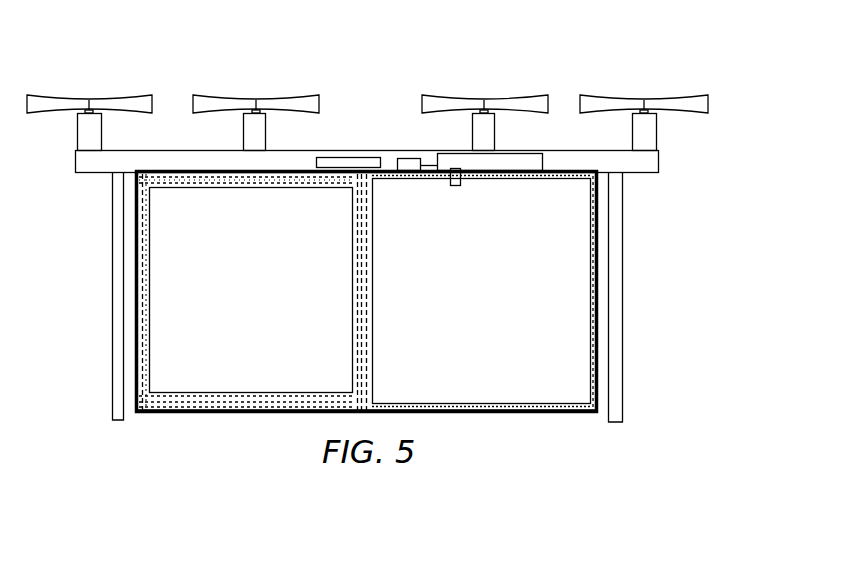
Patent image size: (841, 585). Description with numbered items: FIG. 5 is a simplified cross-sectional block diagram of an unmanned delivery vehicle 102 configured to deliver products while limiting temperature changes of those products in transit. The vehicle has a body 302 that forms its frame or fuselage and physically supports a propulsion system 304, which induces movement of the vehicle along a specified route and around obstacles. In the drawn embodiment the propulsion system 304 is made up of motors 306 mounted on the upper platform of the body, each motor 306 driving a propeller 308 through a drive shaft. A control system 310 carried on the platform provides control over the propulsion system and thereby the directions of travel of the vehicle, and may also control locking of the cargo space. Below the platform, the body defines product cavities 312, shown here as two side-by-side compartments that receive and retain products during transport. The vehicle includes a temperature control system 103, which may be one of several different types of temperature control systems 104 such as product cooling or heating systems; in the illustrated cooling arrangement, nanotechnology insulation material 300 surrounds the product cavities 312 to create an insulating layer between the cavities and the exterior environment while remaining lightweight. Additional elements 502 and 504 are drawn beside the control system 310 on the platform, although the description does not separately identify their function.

The unmanned delivery vehicle 102 is at (708, 66).
The temperature control system 103 is at (565, 429).
The temperature control system 104 is at (415, 140).
The nanotechnology insulation material 300 is at (471, 409).
The body 302 is at (234, 412).
The propulsion system 304 is at (275, 83).
The motor 306 is at (101, 140).
The propeller 308 is at (205, 97).
The control system 310 is at (366, 157).
The product cavity 312 is at (188, 313).
The sensor 502 is at (407, 172).
The controller 504 is at (520, 172).